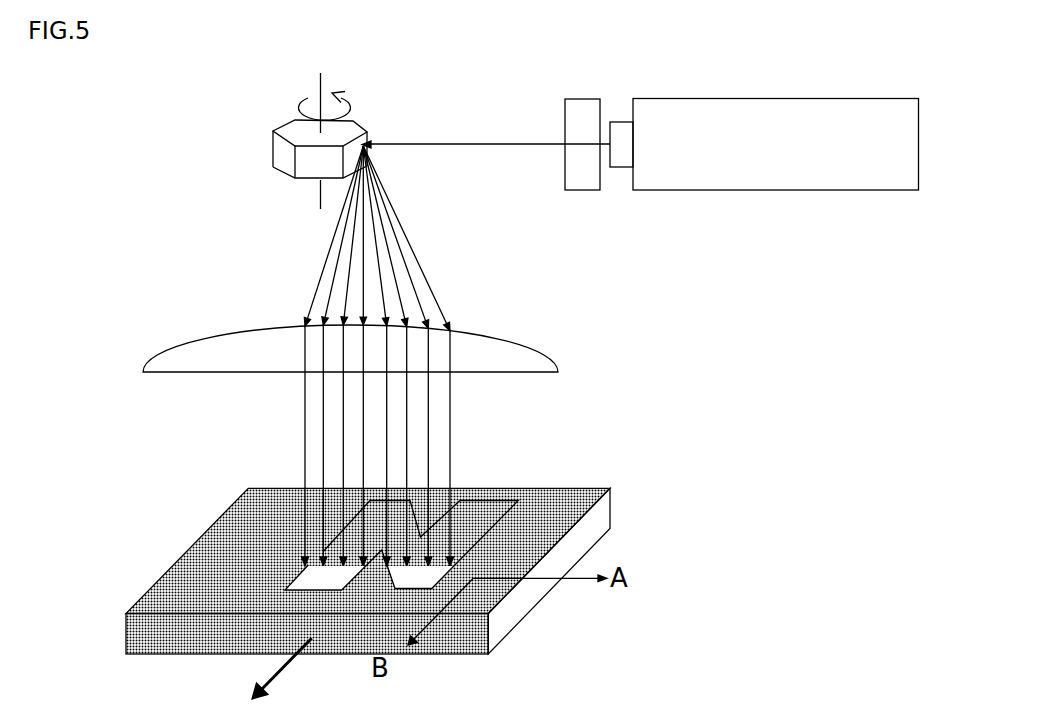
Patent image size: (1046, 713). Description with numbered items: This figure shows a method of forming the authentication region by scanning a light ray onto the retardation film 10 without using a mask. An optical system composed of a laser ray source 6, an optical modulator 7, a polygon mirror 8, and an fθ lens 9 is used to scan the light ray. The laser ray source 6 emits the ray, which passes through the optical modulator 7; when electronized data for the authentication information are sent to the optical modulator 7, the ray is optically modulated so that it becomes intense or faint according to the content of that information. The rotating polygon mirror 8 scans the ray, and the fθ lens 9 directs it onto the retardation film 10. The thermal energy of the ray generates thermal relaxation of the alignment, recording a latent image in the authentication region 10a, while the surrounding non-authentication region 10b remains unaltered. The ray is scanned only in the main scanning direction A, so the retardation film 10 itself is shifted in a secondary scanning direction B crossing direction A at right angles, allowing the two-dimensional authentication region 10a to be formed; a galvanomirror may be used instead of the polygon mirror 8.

The laser ray source 6 is at (764, 168).
The optical modulator 7 is at (623, 169).
The polygon mirror 8 is at (282, 141).
The fθ lens 9 is at (350, 327).
The retardation film 10 is at (388, 528).
The authentication region 10a is at (284, 496).
The non-authentication region 10b is at (330, 571).